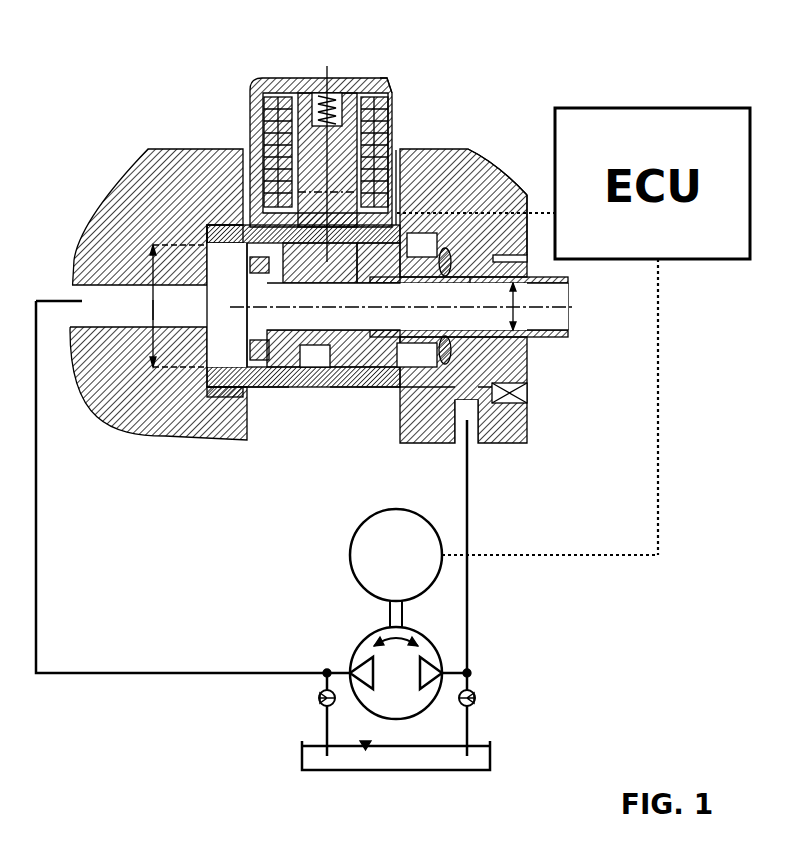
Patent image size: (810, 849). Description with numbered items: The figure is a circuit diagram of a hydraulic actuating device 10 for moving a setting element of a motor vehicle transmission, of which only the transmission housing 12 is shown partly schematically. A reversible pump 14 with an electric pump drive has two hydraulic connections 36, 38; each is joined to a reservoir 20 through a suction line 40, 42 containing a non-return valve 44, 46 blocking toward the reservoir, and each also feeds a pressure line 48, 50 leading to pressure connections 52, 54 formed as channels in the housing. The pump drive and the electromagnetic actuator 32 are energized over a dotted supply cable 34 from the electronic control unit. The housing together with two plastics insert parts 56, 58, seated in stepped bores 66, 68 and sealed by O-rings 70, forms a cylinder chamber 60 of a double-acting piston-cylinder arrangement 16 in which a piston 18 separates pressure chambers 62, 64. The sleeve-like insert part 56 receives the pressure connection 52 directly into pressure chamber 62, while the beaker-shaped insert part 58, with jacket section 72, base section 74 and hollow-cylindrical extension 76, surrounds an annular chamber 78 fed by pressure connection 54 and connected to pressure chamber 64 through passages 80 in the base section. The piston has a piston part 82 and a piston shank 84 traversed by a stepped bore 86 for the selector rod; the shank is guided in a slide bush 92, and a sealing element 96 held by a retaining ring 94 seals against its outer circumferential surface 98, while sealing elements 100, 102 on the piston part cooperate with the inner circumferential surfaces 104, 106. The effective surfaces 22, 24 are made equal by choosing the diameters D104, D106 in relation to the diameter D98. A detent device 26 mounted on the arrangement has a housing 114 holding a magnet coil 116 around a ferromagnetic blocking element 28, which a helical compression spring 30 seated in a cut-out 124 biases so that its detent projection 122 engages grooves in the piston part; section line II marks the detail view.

The hydraulic actuating device 10 is at (495, 90).
The transmission housing 12 is at (172, 158).
The pump 14 is at (382, 714).
The piston-cylinder arrangement 16 is at (330, 389).
The piston 18 is at (333, 388).
The reservoir 20 is at (387, 770).
The effective surface 22 is at (257, 349).
The effective surface 24 is at (441, 272).
The detent device 26 is at (335, 75).
The blocking element 28 is at (320, 188).
The helical compression spring 30 is at (323, 97).
The actuator 32 is at (393, 118).
The supply cable 34 is at (537, 211).
The hydraulic connection 36 is at (352, 673).
The hydraulic connection 38 is at (441, 665).
The suction line 40 is at (325, 736).
The suction line 42 is at (470, 727).
The non-return valve 44 is at (318, 698).
The non-return valve 46 is at (476, 700).
The pressure line 48 is at (230, 673).
The pressure line 50 is at (467, 647).
The pressure connection 52 is at (131, 318).
The pressure connection 54 is at (468, 446).
The insert part 56 is at (207, 233).
The insert part 58 is at (289, 392).
The cylinder chamber 60 is at (345, 390).
The pressure chamber 62 is at (212, 290).
The pressure chamber 64 is at (409, 372).
The stepped bore 66 is at (200, 392).
The stepped bore 68 is at (476, 215).
The O-rings 70 is at (223, 390).
The jacket section 72 is at (243, 227).
The base section 74 is at (500, 205).
The extension 76 is at (528, 254).
The annular chamber 78 is at (500, 405).
The passages 80 is at (445, 252).
The piston part 82 is at (300, 318).
The piston shank 84 is at (512, 307).
The stepped bore 86 is at (535, 312).
The slide bush 92 is at (523, 338).
The retaining ring 94 is at (452, 255).
The sealing element 96 is at (470, 280).
The outer circumferential surface 98 is at (515, 279).
The sealing element 100 is at (262, 340).
The sealing element 102 is at (357, 388).
The inner circumferential surface 104 is at (207, 312).
The inner circumferential surface 106 is at (407, 225).
The housing 114 is at (275, 83).
The magnet coil 116 is at (277, 133).
The detent projection 122 is at (333, 309).
The cut-out 124 is at (374, 87).
The diameter of inner circumferential surface 104 D104 is at (153, 280).
The diameter of inner circumferential surface 106 D106 is at (298, 359).
The diameter of outer circumferential surface 98 D98 is at (573, 325).
The section axis II is at (402, 305).